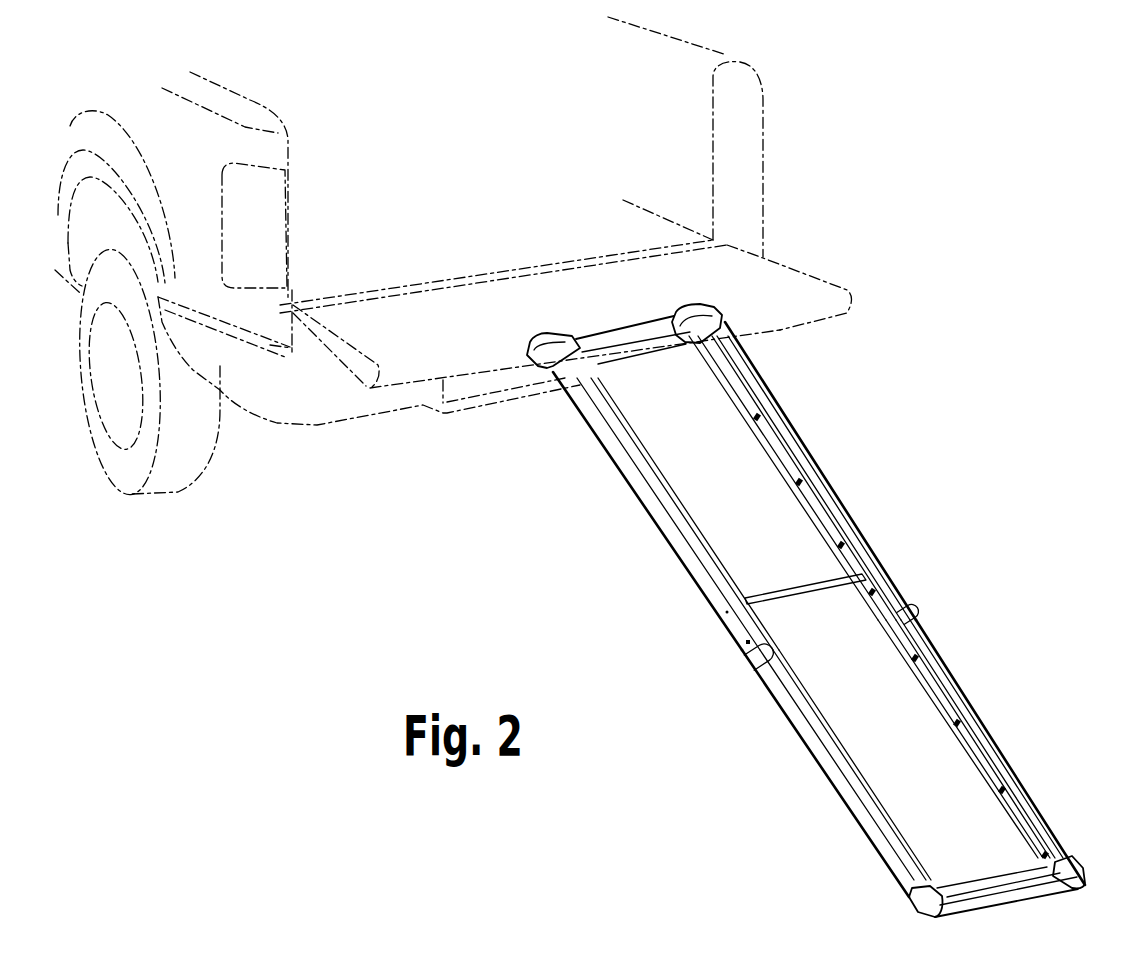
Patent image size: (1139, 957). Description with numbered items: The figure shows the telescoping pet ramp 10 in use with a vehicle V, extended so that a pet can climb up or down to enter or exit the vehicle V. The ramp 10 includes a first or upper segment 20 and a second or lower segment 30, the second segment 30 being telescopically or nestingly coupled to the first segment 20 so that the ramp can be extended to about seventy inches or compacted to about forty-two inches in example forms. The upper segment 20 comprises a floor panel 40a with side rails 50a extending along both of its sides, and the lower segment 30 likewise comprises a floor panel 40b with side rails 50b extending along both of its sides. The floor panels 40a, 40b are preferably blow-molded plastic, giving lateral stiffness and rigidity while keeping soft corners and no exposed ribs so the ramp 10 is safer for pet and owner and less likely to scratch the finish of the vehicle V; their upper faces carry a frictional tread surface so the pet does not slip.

The vehicle V is at (735, 42).
The telescoping pet ramp 10 is at (800, 610).
The first segment 20 is at (712, 486).
The second segment 30 is at (858, 737).
The floor panel 40a is at (690, 465).
The floor panel 40b is at (883, 778).
The side rails 50a is at (852, 510).
The side rails 50b is at (962, 697).